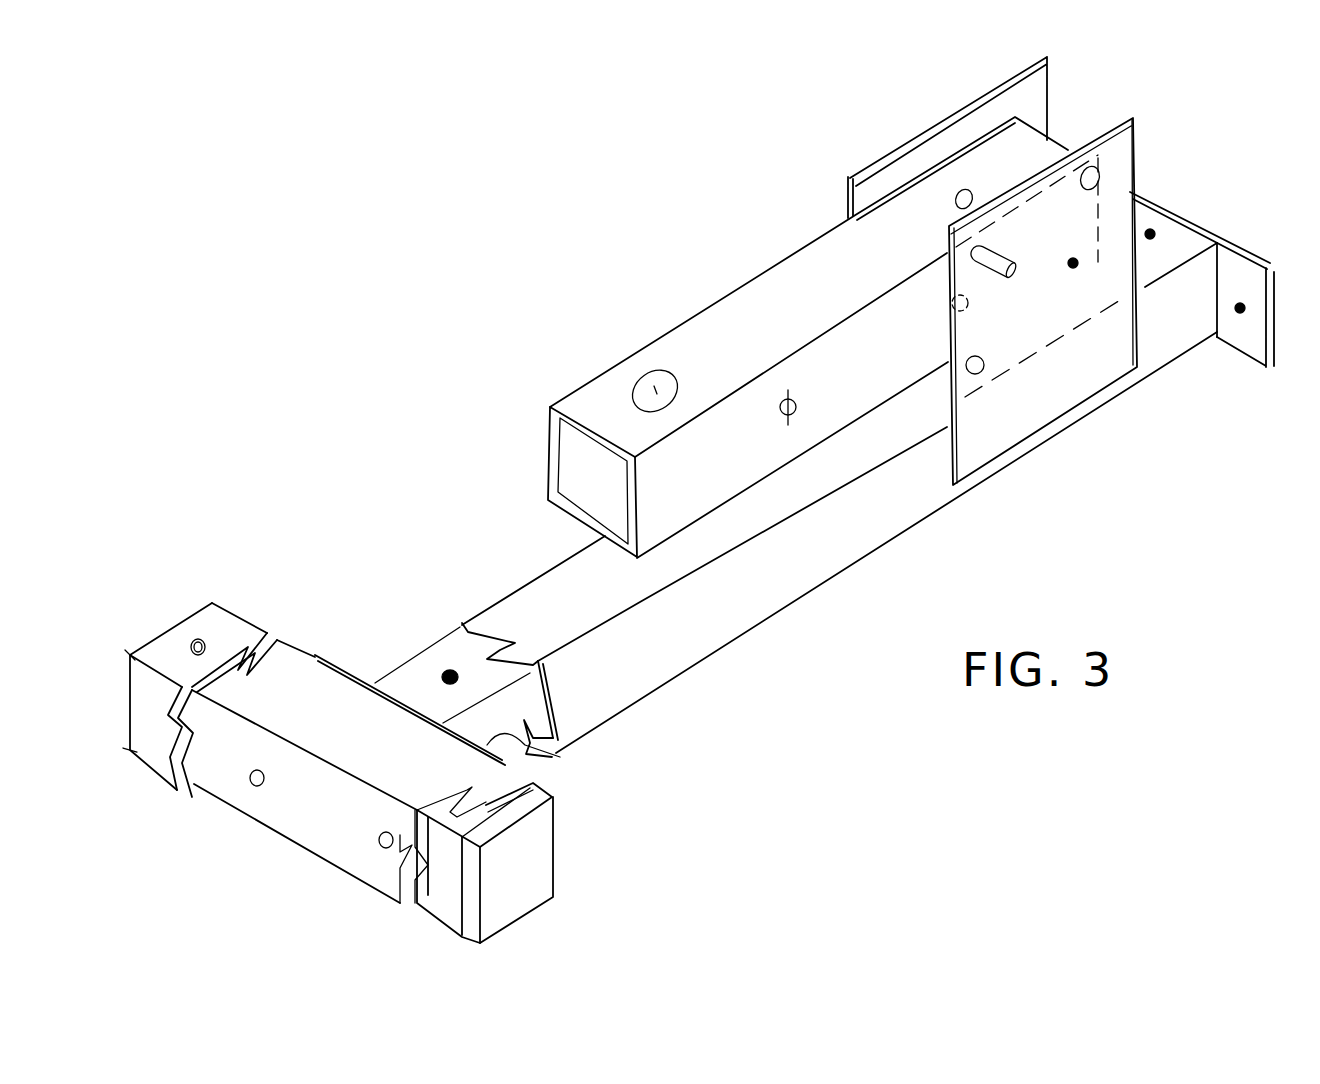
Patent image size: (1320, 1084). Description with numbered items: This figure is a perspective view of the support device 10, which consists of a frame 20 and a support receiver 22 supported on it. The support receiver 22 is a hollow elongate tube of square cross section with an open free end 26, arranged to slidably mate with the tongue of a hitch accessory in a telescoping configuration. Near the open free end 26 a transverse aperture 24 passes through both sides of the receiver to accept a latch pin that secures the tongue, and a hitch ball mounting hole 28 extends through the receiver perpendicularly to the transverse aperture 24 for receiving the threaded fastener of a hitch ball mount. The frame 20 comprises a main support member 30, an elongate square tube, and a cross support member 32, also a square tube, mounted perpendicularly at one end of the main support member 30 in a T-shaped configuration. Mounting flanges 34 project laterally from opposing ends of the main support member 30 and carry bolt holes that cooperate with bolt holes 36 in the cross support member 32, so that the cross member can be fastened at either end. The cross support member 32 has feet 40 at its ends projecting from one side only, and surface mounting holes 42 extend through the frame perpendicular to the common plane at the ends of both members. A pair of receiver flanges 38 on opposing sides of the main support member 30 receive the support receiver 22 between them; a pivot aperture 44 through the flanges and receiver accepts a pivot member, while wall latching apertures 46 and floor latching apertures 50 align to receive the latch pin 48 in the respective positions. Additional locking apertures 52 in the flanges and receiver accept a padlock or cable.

The device 10 is at (441, 378).
The frame 20 is at (411, 613).
The support receiver 22 is at (752, 325).
The transverse aperture 24 is at (800, 407).
The open free end 26 is at (570, 470).
The hitch ball mounting hole 28 is at (647, 381).
The main support member 30 is at (753, 613).
The cross support member 32 is at (310, 683).
The mounting flanges 34 is at (522, 745).
The bolt holes 36 is at (255, 786).
The receiver flanges 38 is at (1118, 160).
The feet 40 is at (492, 941).
The surface mounting holes 42 is at (195, 639).
The pivot aperture 44 is at (1076, 266).
The wall latching apertures 46 is at (1086, 167).
The latch pin 48 is at (995, 246).
The floor latching apertures 50 is at (985, 247).
The locking apertures 52 is at (985, 377).